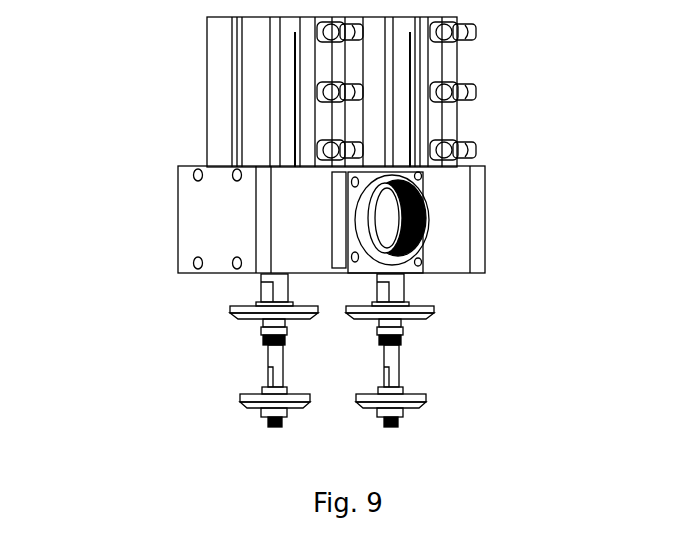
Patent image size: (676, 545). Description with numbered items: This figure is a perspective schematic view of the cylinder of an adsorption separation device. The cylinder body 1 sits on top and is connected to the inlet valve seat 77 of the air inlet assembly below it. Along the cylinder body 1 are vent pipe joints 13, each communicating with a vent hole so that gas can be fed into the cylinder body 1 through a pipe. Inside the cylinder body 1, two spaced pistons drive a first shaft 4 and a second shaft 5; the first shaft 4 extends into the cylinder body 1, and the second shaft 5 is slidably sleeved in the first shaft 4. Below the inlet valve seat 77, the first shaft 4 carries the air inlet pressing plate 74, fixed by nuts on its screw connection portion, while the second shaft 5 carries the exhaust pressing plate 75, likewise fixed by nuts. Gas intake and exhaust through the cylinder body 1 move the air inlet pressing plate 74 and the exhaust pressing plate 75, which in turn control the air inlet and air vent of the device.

The cylinder body 1 is at (216, 64).
The vent pipe joint 13 is at (478, 27).
The inlet valve seat 77 is at (485, 218).
The first shaft 4 is at (403, 287).
The air inlet pressing plate 74 is at (233, 307).
The second shaft 5 is at (397, 374).
The exhaust pressing plate 75 is at (240, 398).